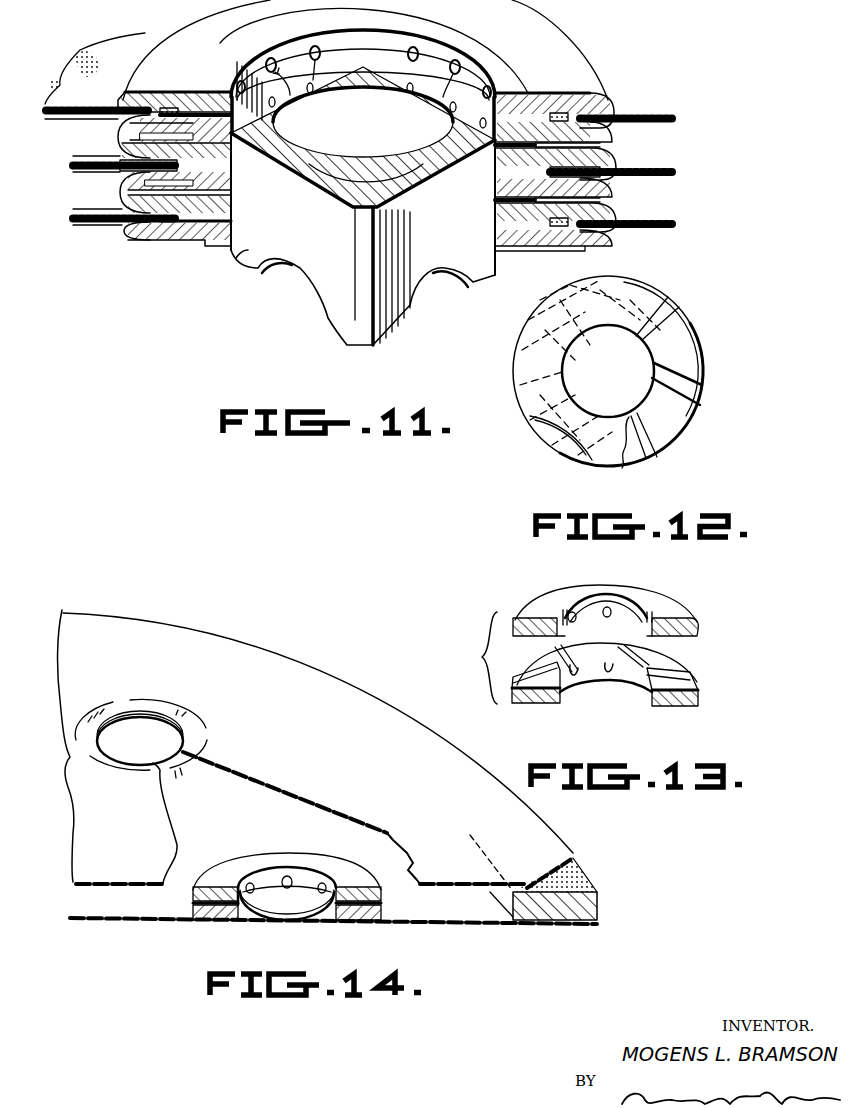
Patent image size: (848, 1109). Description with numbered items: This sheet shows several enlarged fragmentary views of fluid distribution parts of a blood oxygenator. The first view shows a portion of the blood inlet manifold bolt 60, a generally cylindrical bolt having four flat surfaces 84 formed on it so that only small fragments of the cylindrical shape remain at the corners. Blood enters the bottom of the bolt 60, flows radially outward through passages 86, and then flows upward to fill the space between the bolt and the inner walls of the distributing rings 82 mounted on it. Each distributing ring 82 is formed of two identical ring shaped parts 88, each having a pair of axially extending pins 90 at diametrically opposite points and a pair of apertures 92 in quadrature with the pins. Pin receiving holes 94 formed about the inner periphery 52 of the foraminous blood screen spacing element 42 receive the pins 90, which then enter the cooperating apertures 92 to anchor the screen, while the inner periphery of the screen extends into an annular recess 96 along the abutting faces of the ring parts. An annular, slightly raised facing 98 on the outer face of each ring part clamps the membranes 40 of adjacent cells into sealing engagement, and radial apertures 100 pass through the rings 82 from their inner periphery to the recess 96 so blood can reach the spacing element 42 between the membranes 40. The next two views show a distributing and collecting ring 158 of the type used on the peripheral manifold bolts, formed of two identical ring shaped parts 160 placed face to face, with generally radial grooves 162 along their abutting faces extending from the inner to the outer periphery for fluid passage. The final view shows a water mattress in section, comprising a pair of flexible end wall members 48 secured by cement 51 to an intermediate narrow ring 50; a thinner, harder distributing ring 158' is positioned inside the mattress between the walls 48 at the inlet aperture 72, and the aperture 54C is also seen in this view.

In FIG. 11, the membranes 40 is at (650, 128).
In FIG. 11, the foraminous blood screen spacing element 42 is at (92, 55).
In FIG. 14, the flexible end wall members 48 is at (540, 842).
In FIG. 14, the narrow ring 50 is at (597, 910).
In FIG. 14, the cement 51 is at (577, 875).
In FIG. 11, the inner periphery 52 is at (148, 124).
In FIG. 14, the aperture 54C is at (165, 728).
In FIG. 11, the blood inlet manifold bolt 60 is at (338, 322).
In FIG. 14, the inlet aperture 72 is at (243, 905).
In FIG. 11, the distributing rings 82 is at (596, 76).
In FIG. 11, the flat surfaces 84 is at (245, 250).
In FIG. 11, the passages 86 is at (278, 278).
In FIG. 11, the ring shaped parts 88 is at (541, 104).
In FIG. 11, the pins 90 is at (150, 122).
In FIG. 11, the apertures 92 is at (150, 140).
In FIG. 11, the pin receiving holes 94 is at (147, 125).
In FIG. 11, the annular recess 96 is at (140, 180).
In FIG. 11, the raised facing 98 is at (236, 48).
In FIG. 11, the radial apertures 100 is at (443, 97).
In FIG. 12, the distributing and collecting rings 158 is at (639, 371).
In FIG. 13, the distributing and collecting rings 158 is at (628, 604).
In FIG. 14, the thinner distributing rings 158' is at (287, 880).
In FIG. 12, the ring shaped parts 160 is at (628, 466).
In FIG. 13, the ring shaped parts 160 is at (700, 678).
In FIG. 12, the radial grooves 162 is at (705, 386).
In FIG. 13, the radial grooves 162 is at (610, 611).